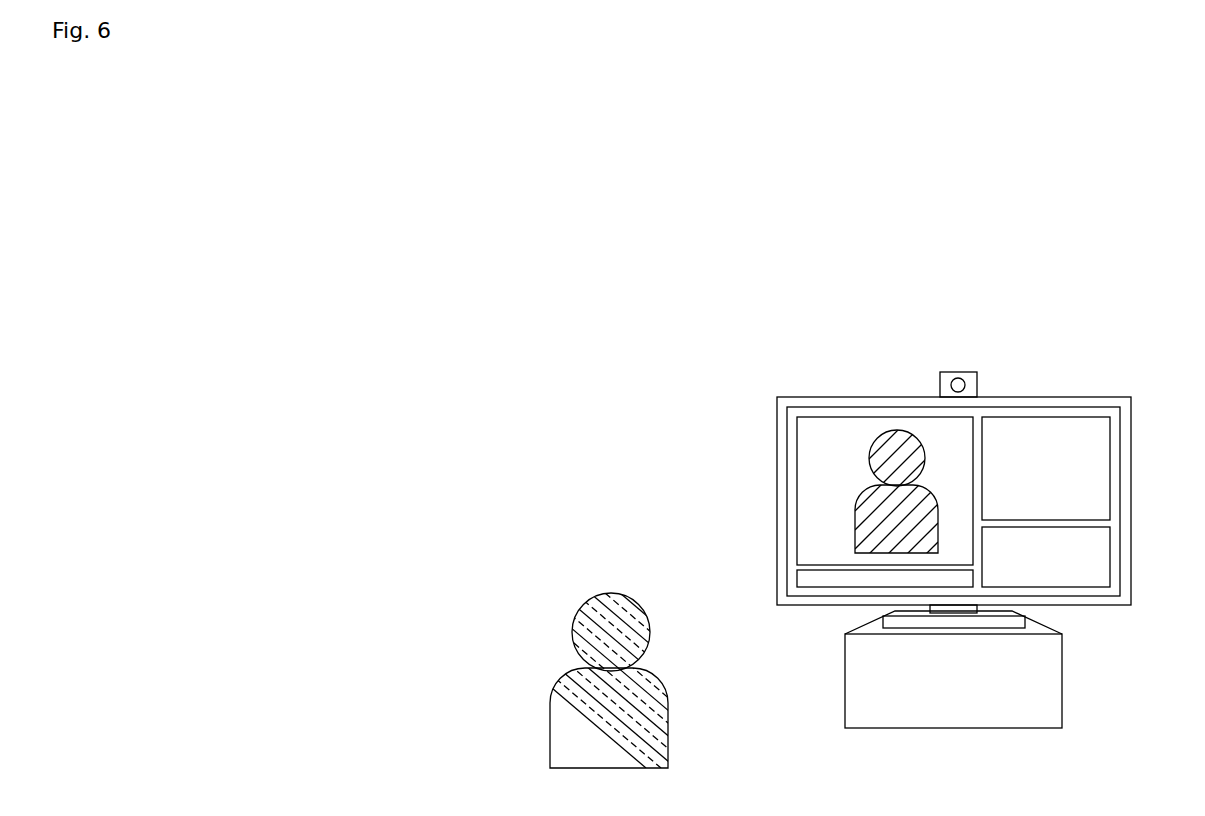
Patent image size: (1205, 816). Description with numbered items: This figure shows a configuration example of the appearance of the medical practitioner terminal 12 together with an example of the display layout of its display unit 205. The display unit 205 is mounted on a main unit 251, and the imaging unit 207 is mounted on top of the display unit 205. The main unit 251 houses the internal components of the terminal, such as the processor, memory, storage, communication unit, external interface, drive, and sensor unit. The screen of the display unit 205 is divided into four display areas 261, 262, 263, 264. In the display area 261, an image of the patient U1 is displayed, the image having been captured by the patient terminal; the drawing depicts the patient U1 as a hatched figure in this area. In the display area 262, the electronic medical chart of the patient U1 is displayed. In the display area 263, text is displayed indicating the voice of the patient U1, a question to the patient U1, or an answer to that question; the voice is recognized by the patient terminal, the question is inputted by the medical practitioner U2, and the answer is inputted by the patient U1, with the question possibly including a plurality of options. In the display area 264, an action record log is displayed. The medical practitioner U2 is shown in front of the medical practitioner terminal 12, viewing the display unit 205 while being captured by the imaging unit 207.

The medical practitioner terminal 12 is at (645, 421).
The display unit 205 is at (1092, 397).
The imaging unit 207 is at (969, 371).
The main unit 251 is at (1062, 680).
The display area 261 is at (846, 415).
The display area 262 is at (1092, 465).
The display area 263 is at (812, 578).
The display area 264 is at (1092, 556).
The patient U1 is at (856, 528).
The medical practitioner U2 is at (551, 730).